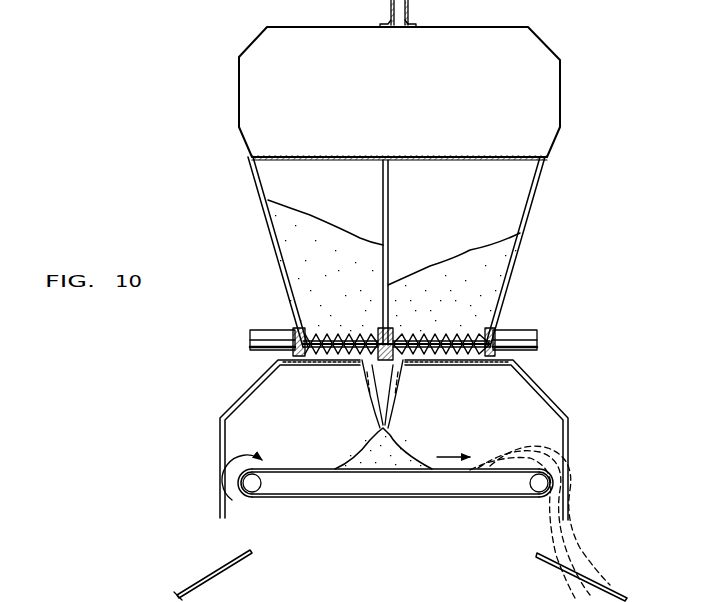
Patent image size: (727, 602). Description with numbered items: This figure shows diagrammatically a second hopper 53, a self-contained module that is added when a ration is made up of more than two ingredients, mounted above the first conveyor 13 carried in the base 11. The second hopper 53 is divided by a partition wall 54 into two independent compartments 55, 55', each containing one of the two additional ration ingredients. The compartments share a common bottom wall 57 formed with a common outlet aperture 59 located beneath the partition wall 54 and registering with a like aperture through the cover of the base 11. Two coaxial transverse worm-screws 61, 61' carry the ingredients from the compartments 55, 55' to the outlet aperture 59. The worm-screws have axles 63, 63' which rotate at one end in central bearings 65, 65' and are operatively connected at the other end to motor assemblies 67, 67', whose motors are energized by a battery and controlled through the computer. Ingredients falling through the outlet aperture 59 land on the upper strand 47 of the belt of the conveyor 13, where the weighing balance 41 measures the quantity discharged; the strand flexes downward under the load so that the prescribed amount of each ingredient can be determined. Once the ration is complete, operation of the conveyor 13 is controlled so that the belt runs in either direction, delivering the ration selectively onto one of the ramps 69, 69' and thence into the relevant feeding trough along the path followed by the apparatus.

The base 11 is at (550, 388).
The first endless conveyor 13 is at (410, 500).
The first weighing balance 41 is at (345, 483).
The upper strand 47 is at (305, 468).
The second hopper 53 is at (545, 188).
The partition wall 54 is at (388, 192).
The compartment 55 is at (480, 243).
The compartment 55' is at (290, 210).
The common bottom wall 57 is at (460, 334).
The common outlet aperture 59 is at (400, 378).
The transverse worm-screw 61 is at (441, 283).
The transverse worm-screw 61' is at (319, 324).
The axle 63 is at (441, 283).
The axle 63' is at (309, 309).
The central bearing 65 is at (440, 288).
The central bearing 65' is at (363, 275).
The motor assembly 67 is at (547, 330).
The motor assembly 67' is at (256, 331).
The ramp 69 is at (573, 577).
The ramp 69' is at (209, 575).